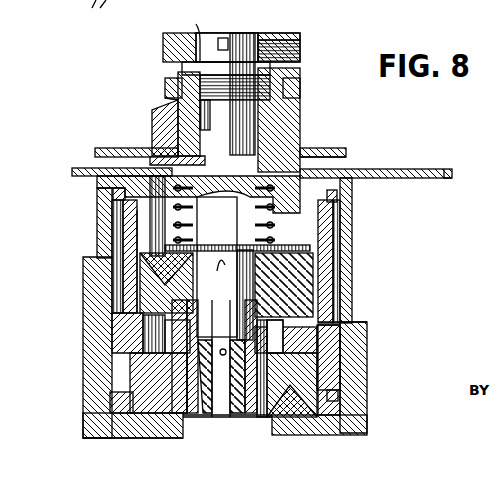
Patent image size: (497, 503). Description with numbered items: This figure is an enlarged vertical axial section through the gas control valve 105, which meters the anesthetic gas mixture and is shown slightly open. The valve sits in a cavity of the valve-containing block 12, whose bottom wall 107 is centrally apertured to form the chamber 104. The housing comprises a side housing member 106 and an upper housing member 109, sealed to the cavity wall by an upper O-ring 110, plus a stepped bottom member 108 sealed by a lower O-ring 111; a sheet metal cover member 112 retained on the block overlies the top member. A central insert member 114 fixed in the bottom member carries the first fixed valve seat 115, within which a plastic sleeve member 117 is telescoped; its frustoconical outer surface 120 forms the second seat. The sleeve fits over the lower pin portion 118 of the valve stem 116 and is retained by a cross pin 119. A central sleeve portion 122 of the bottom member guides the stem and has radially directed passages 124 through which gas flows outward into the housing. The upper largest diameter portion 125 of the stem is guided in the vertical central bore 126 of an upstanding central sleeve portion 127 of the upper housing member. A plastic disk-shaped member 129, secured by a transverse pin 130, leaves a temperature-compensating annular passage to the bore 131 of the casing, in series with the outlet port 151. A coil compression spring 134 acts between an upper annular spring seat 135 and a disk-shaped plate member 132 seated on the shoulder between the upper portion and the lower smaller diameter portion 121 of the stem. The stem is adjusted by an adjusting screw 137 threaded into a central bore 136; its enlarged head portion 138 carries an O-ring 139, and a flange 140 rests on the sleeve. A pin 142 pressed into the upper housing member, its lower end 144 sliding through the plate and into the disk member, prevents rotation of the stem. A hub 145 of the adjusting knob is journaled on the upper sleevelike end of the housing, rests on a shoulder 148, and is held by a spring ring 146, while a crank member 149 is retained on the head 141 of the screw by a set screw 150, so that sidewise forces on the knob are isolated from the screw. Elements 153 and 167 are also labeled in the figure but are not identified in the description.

The valve-containing block 12 is at (76, 326).
The chamber 104 is at (205, 440).
The gas control valve 105 is at (340, 170).
The side housing member 106 is at (345, 378).
The bottom wall 107 is at (150, 432).
The bottom member 108 is at (334, 436).
The upper housing member 109 is at (284, 152).
The O-ring 110 is at (342, 200).
The O-ring 111 is at (348, 403).
The sheet metal cover member 112 is at (432, 172).
The central insert member 114 is at (140, 438).
The first fixed valve seat 115 is at (217, 431).
The valve stem 116 is at (292, 273).
The plastic sleeve member 117 is at (292, 385).
The lower pin portion 118 is at (232, 430).
The cross pin 119 is at (222, 356).
The frustoconical outer surface 120 is at (250, 420).
The lower smaller diameter portion 121 is at (206, 242).
The central sleeve portion 122 is at (345, 325).
The radially directed passages 124 is at (175, 348).
The upper largest diameter portion 125 is at (283, 215).
The vertical central bore 126 is at (300, 98).
The upstanding central sleeve portion 127 is at (268, 117).
The disk-shaped member 129 is at (320, 290).
The transverse pin 130 is at (222, 267).
The bore 131 is at (140, 330).
The disk-shaped plate member 132 is at (300, 247).
The coil compression spring 134 is at (152, 184).
The upper annular spring seat 135 is at (180, 156).
The central bore 136 is at (200, 150).
The adjusting screw 137 is at (220, 116).
The enlarged head portion 138 is at (222, 80).
The O-ring 139 is at (270, 76).
The flange 140 is at (206, 62).
The head 141 is at (265, 34).
The pin 142 is at (152, 236).
The lower end 144 is at (158, 252).
The hub 145 is at (178, 92).
The spring ring 146 is at (165, 83).
The shoulder 148 is at (180, 154).
The crank member 149 is at (172, 47).
The set screw 150 is at (292, 42).
The outlet port 151 is at (125, 215).
The sleeve wall 153 is at (130, 240).
The plate edge 167 is at (350, 152).